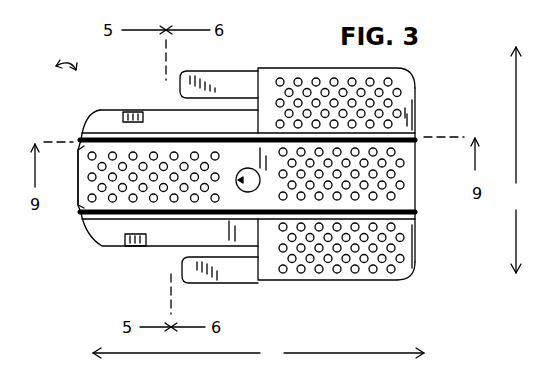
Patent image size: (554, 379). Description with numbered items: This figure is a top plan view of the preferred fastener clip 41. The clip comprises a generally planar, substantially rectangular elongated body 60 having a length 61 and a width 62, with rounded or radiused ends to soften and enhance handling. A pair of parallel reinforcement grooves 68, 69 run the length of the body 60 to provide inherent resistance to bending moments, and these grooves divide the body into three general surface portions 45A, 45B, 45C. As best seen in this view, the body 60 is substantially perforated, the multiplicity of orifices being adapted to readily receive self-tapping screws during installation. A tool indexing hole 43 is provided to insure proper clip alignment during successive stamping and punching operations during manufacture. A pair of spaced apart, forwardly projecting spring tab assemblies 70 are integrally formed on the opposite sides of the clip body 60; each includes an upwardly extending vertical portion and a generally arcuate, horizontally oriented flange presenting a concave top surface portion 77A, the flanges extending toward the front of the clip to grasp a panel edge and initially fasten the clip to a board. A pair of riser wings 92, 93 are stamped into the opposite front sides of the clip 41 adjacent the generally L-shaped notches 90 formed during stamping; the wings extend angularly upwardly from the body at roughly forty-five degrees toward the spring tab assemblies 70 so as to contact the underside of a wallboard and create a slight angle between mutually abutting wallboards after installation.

The spring tab assembly 70 is at (236, 59).
The concave top surface portion 77A is at (192, 77).
The riser wing 93 is at (128, 112).
The riser wing 92 is at (131, 246).
The L-shaped notch 90 is at (141, 112).
The clip body 60 is at (378, 156).
The surface portion 45A is at (407, 120).
The surface portion 45B is at (407, 178).
The surface portion 45C is at (366, 266).
The reinforcement groove 69 is at (414, 138).
The reinforcement groove 68 is at (414, 211).
The tool indexing hole 43 is at (248, 180).
The clip 41 is at (58, 58).
The length 61 is at (258, 354).
The width 62 is at (518, 160).